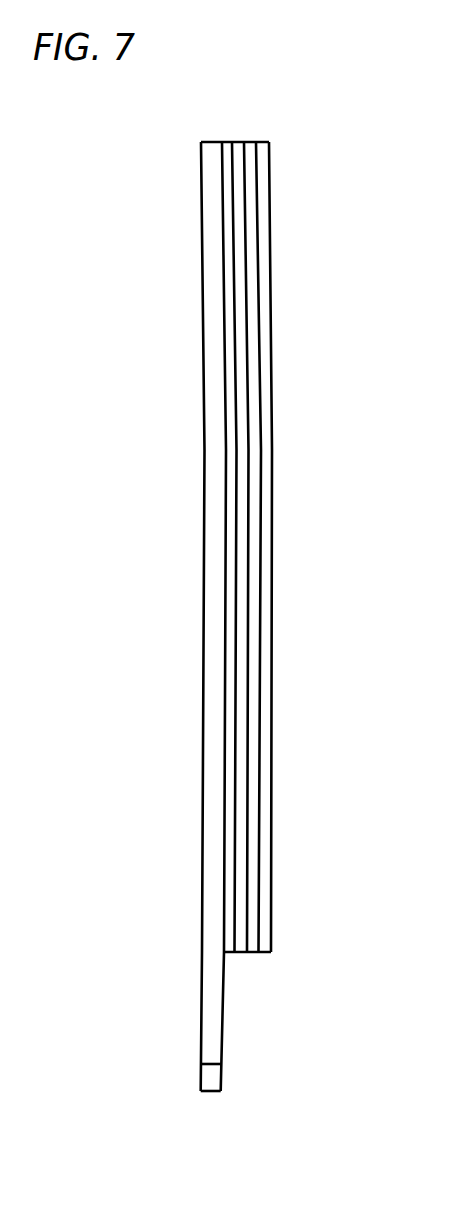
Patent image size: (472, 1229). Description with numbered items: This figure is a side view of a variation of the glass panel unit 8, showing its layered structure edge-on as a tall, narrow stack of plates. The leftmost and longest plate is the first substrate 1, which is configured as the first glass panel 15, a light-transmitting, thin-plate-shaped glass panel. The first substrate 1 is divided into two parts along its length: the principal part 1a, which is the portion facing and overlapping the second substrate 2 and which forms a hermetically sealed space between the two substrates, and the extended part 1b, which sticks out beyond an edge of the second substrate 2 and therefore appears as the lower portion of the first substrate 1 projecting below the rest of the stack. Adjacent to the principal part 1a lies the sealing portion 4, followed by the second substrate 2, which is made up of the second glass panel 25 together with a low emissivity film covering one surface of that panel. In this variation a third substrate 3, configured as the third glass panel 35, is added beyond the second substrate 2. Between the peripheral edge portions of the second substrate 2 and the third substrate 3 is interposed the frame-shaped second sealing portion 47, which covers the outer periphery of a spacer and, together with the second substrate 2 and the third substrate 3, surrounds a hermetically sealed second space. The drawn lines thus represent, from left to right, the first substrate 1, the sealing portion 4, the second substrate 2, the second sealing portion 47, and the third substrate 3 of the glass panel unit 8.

The glass panel unit 8 is at (202, 214).
The first substrate 1 is at (205, 436).
The principal part 1a is at (213, 508).
The extended part 1b is at (208, 991).
The first glass panel 15 is at (212, 703).
The sealing portion 4 is at (232, 584).
The second substrate 2 is at (243, 443).
The second glass panel 25 is at (243, 492).
The second sealing portion 47 is at (255, 831).
The third substrate 3 is at (273, 653).
The third glass panel 35 is at (268, 722).